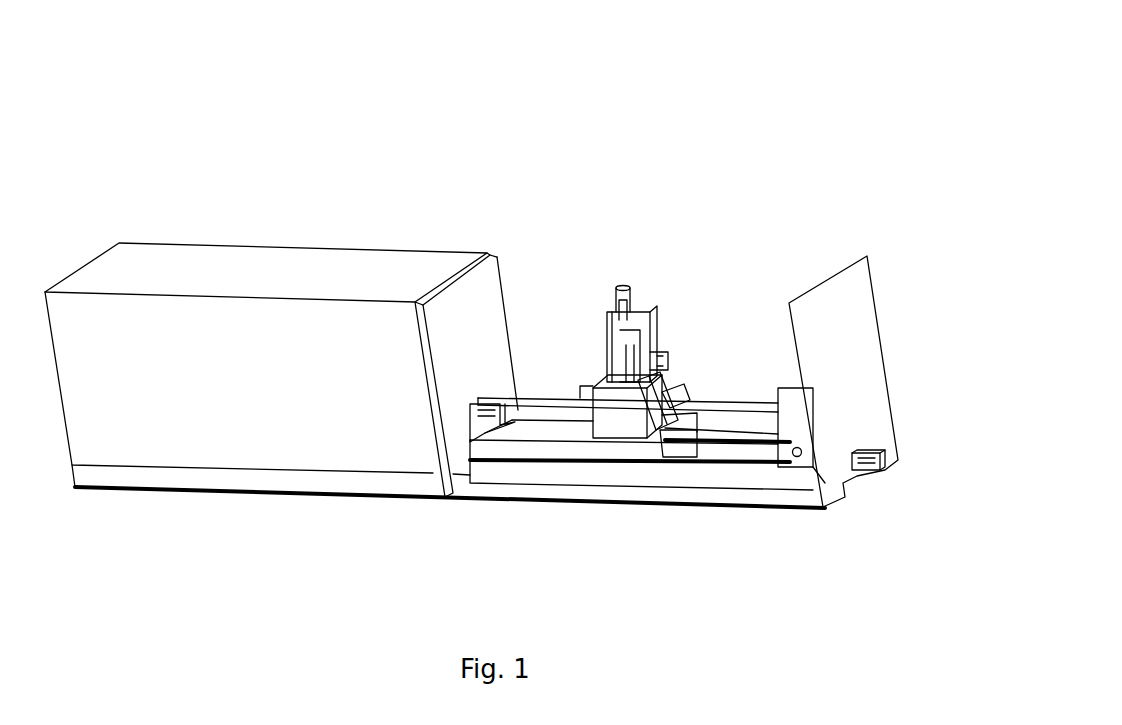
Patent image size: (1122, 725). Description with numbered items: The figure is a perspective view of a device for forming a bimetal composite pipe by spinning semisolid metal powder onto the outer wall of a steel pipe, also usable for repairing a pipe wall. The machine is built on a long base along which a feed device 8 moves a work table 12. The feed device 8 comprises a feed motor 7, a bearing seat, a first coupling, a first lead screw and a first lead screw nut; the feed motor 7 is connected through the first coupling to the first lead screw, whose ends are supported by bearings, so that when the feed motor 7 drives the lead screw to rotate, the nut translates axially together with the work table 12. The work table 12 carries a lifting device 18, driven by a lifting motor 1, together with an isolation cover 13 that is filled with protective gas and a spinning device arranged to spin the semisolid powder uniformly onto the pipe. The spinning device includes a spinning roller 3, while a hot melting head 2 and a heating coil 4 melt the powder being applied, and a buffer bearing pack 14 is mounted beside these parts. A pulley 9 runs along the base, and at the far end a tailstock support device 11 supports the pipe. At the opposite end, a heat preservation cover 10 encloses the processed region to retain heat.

The lifting motor 1 is at (628, 271).
The hot melting head 2 is at (669, 355).
The spinning roller 3 is at (674, 375).
The heating coil 4 is at (680, 389).
The feed motor 7 is at (870, 440).
The feed device 8 is at (774, 479).
The pulley 9 is at (384, 506).
The heat preservation cover 10 is at (190, 393).
The tailstock support device 11 is at (457, 401).
The work table 12 is at (593, 429).
The isolation cover 13 is at (576, 369).
The buffer bearing pack 14 is at (659, 408).
The lifting device 18 is at (618, 326).